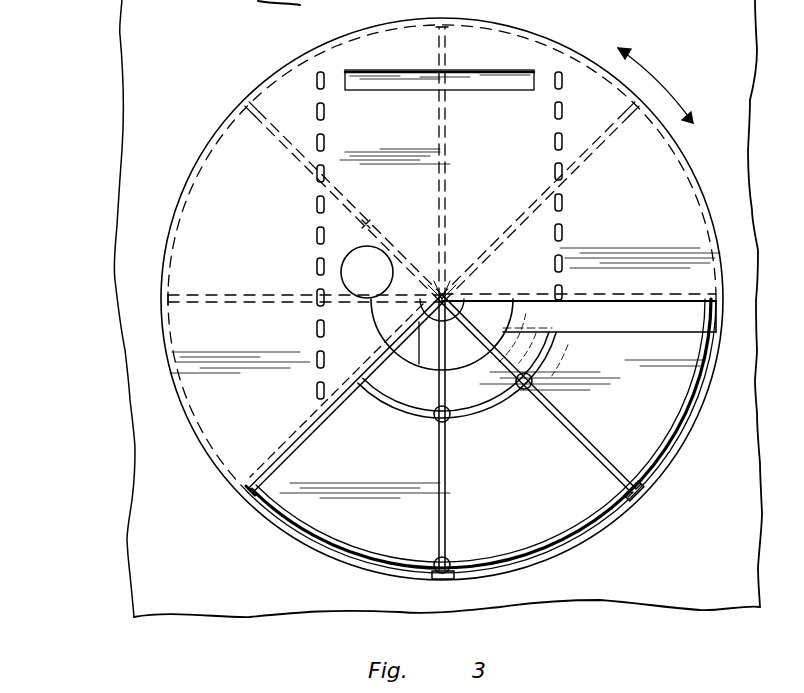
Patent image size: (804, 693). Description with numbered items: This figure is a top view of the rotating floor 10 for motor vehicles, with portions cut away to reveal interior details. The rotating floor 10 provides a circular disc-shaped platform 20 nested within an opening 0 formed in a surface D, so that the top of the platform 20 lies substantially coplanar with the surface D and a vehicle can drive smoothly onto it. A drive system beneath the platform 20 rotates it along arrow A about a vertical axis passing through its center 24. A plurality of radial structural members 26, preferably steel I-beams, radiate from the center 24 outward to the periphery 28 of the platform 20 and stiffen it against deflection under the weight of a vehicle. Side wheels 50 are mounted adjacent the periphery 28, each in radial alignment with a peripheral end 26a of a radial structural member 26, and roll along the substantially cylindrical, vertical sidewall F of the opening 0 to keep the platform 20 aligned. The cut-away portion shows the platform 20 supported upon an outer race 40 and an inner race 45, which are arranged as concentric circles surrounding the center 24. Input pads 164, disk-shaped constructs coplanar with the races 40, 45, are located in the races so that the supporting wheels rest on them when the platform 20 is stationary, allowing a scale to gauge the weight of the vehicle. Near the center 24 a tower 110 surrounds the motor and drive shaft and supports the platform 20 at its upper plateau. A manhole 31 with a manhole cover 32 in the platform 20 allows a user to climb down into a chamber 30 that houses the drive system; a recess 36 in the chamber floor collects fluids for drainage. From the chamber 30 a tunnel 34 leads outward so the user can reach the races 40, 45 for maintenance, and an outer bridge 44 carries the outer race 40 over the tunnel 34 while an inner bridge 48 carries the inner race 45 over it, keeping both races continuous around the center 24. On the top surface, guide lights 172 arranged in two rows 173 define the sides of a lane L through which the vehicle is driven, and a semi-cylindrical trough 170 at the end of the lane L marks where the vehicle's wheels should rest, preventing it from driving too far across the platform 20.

The rotating floor 10 is at (180, 136).
The platform 20 is at (250, 219).
The center 24 is at (449, 292).
The radial structural members 26 is at (592, 437).
The peripheral end 26a is at (633, 500).
The periphery 28 is at (238, 485).
The chamber 30 is at (480, 357).
The manhole 31 is at (370, 224).
The manhole cover 32 is at (382, 284).
The tunnel 34 is at (622, 327).
The recess 36 is at (413, 353).
The outer race 40 is at (697, 422).
The outer bridge 44 is at (713, 313).
The inner race 45 is at (495, 411).
The inner bridge 48 is at (527, 322).
The side wheels 50 is at (641, 493).
The tower 110 is at (477, 298).
The input pads 164 is at (435, 419).
The trough 170 is at (410, 92).
The guide lights 172 is at (318, 143).
The rows 173 is at (318, 248).
The opening 0 is at (583, 525).
The arrow A is at (657, 68).
The surface D is at (182, 60).
The lane L is at (378, 201).
The sidewall F is at (288, 519).